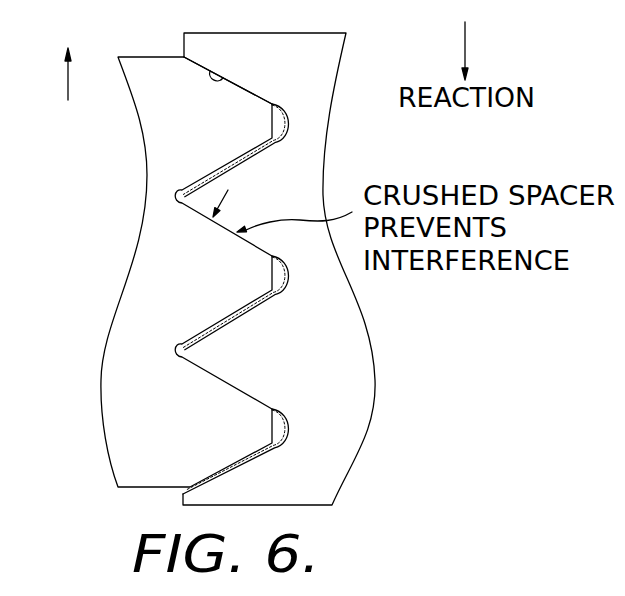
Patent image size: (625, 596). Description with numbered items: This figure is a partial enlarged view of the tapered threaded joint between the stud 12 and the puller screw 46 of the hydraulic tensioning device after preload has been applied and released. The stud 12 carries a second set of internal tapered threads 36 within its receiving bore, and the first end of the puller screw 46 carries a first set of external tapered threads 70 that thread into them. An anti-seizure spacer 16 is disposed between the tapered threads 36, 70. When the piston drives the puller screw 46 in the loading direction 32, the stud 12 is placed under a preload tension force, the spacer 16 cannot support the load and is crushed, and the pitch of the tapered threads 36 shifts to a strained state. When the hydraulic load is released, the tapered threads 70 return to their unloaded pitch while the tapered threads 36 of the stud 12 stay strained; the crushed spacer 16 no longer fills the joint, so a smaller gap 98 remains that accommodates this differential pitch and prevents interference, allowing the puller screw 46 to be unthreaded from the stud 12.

The stud 12 is at (330, 52).
The puller screw 46 is at (156, 66).
The anti-seizure spacer 16 is at (258, 158).
The second set of internal tapered threads 36 is at (222, 84).
The first set of external tapered threads 70 is at (243, 79).
The loading direction 32 is at (68, 87).
The gap 98 is at (215, 222).